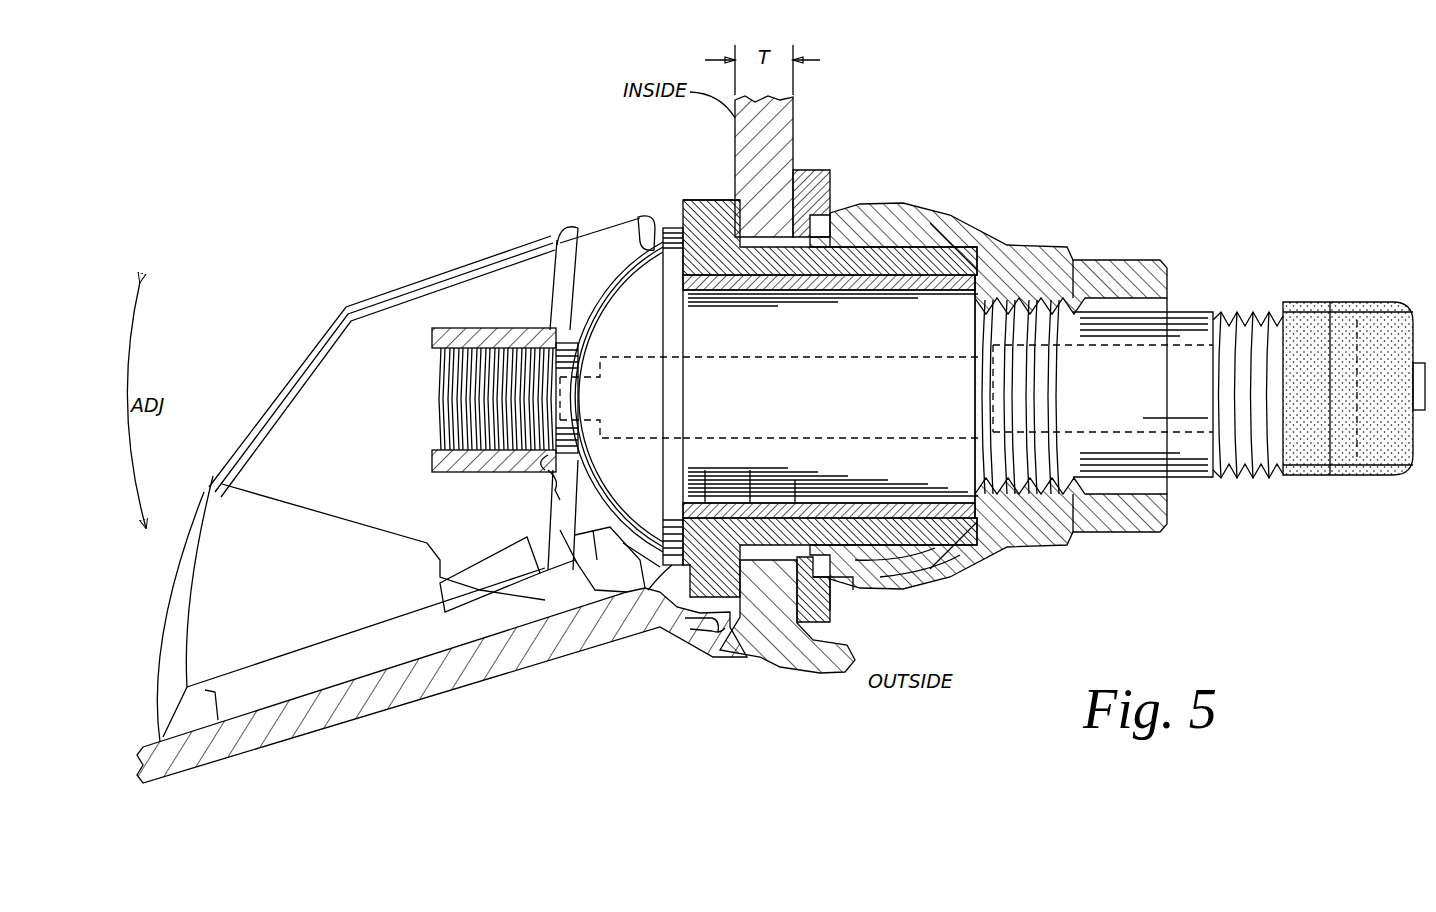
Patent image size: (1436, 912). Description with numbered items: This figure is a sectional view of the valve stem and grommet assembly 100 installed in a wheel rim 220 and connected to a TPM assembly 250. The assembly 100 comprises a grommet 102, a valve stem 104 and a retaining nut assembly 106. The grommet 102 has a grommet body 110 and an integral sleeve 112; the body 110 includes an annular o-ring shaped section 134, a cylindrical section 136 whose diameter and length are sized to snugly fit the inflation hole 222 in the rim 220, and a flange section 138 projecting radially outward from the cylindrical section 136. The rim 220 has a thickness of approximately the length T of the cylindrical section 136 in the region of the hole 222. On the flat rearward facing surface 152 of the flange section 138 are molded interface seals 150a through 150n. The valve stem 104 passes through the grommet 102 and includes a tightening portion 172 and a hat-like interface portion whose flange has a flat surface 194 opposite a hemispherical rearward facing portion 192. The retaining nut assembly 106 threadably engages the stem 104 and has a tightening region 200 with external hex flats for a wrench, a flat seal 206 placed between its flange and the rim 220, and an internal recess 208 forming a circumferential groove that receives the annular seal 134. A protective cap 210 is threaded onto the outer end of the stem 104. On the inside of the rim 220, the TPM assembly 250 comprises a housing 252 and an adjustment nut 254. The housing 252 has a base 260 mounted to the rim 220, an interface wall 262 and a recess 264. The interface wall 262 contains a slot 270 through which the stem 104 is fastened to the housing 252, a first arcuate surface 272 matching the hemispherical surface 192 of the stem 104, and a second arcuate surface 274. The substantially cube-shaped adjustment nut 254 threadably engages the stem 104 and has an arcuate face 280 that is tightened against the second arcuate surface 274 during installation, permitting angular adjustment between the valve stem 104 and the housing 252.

The valve stem and grommet assembly 100 is at (915, 112).
The grommet 102 is at (716, 205).
The valve stem 104 is at (1188, 312).
The retaining nut assembly 106 is at (935, 208).
The grommet body 110 is at (965, 565).
The sleeve 112 is at (900, 583).
The annular section 134 is at (862, 598).
The cylindrical section 136 is at (768, 250).
The flange section 138 is at (718, 640).
The interface seal 150a is at (705, 520).
The interface seal 150n is at (750, 520).
The rearward facing surface 152 is at (655, 510).
The tightening portion 172 is at (1200, 478).
The hemispherical rearward facing portion 192 is at (673, 228).
The flat surface 194 is at (696, 215).
The tightening region 200 is at (1110, 530).
The flat seal 206 is at (813, 172).
The internal recess 208 is at (835, 210).
The protective cap 210 is at (1345, 302).
The wheel rim 220 is at (793, 122).
The inflation hole 222 is at (795, 520).
The TPM assembly 250 is at (419, 431).
The housing 252 is at (195, 512).
The adjustment nut 254 is at (428, 330).
The base 260 is at (340, 665).
The interface wall 262 is at (658, 196).
The recess 264 is at (687, 205).
The slot 270 is at (552, 328).
The first arcuate surface 272 is at (600, 518).
The second arcuate surface 274 is at (565, 352).
The face 280 is at (545, 500).